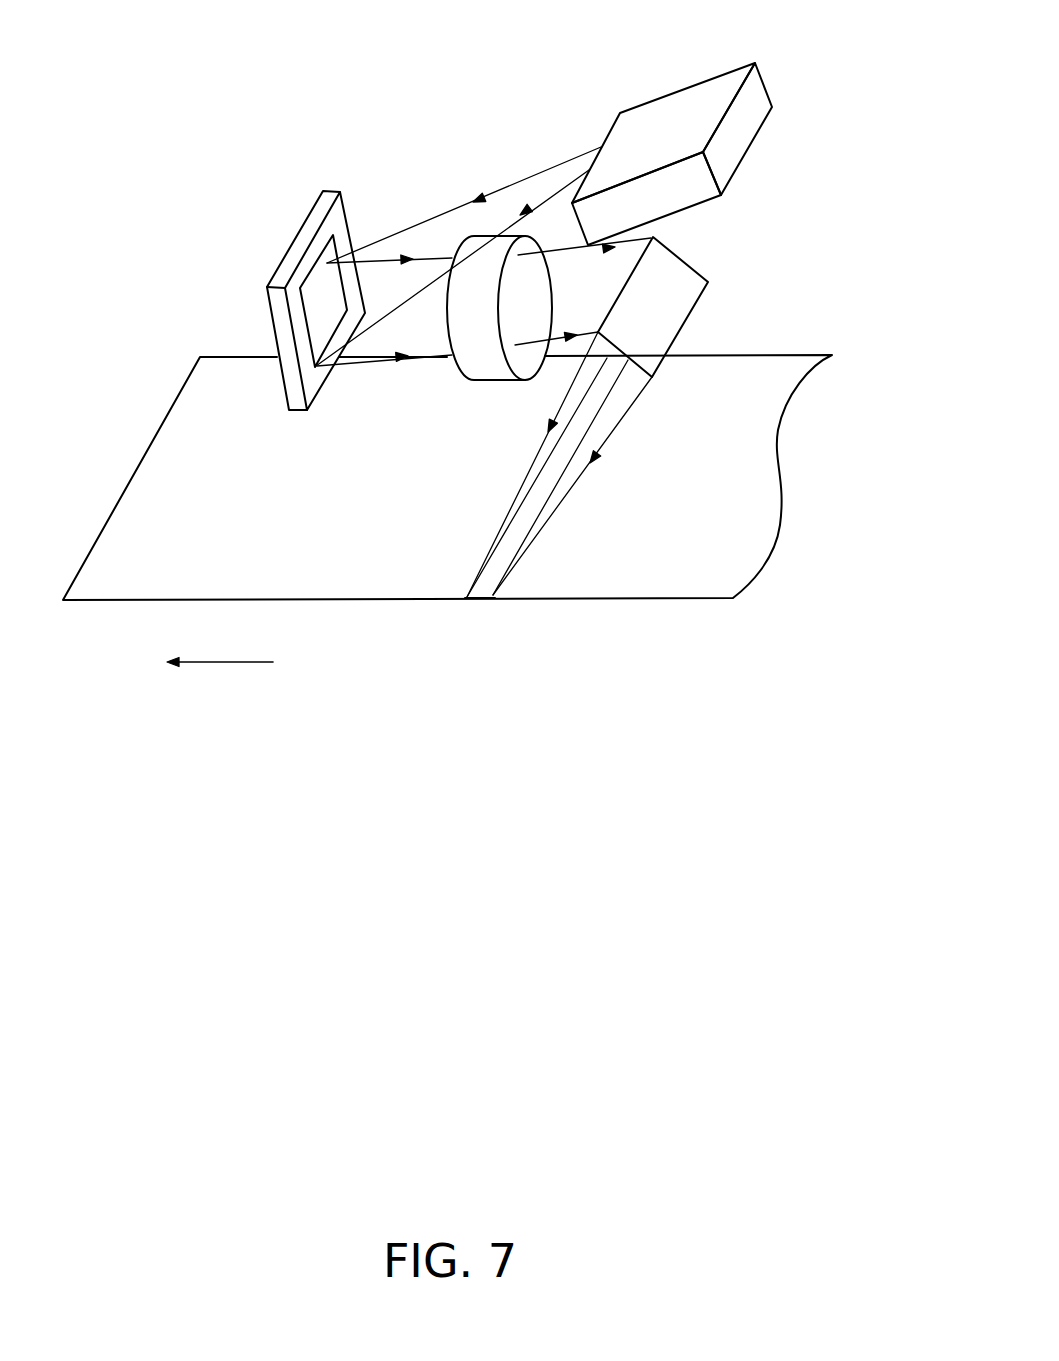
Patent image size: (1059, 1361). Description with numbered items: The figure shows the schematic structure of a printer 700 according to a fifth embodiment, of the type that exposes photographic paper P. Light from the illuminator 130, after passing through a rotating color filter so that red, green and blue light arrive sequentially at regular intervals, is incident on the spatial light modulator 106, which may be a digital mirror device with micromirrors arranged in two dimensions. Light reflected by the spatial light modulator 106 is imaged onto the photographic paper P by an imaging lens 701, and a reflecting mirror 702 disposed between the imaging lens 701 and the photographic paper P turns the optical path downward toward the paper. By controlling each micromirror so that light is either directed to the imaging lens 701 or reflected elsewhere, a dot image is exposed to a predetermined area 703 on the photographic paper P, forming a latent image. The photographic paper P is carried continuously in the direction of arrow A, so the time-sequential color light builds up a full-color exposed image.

The printer 700 is at (480, 128).
The illuminator 130 is at (647, 103).
The spatial light modulator 106 is at (348, 220).
The imaging lens 701 is at (490, 373).
The reflecting mirror 702 is at (663, 358).
The predetermined area 703 is at (482, 600).
The photographic paper P is at (368, 580).
The arrow A is at (222, 662).